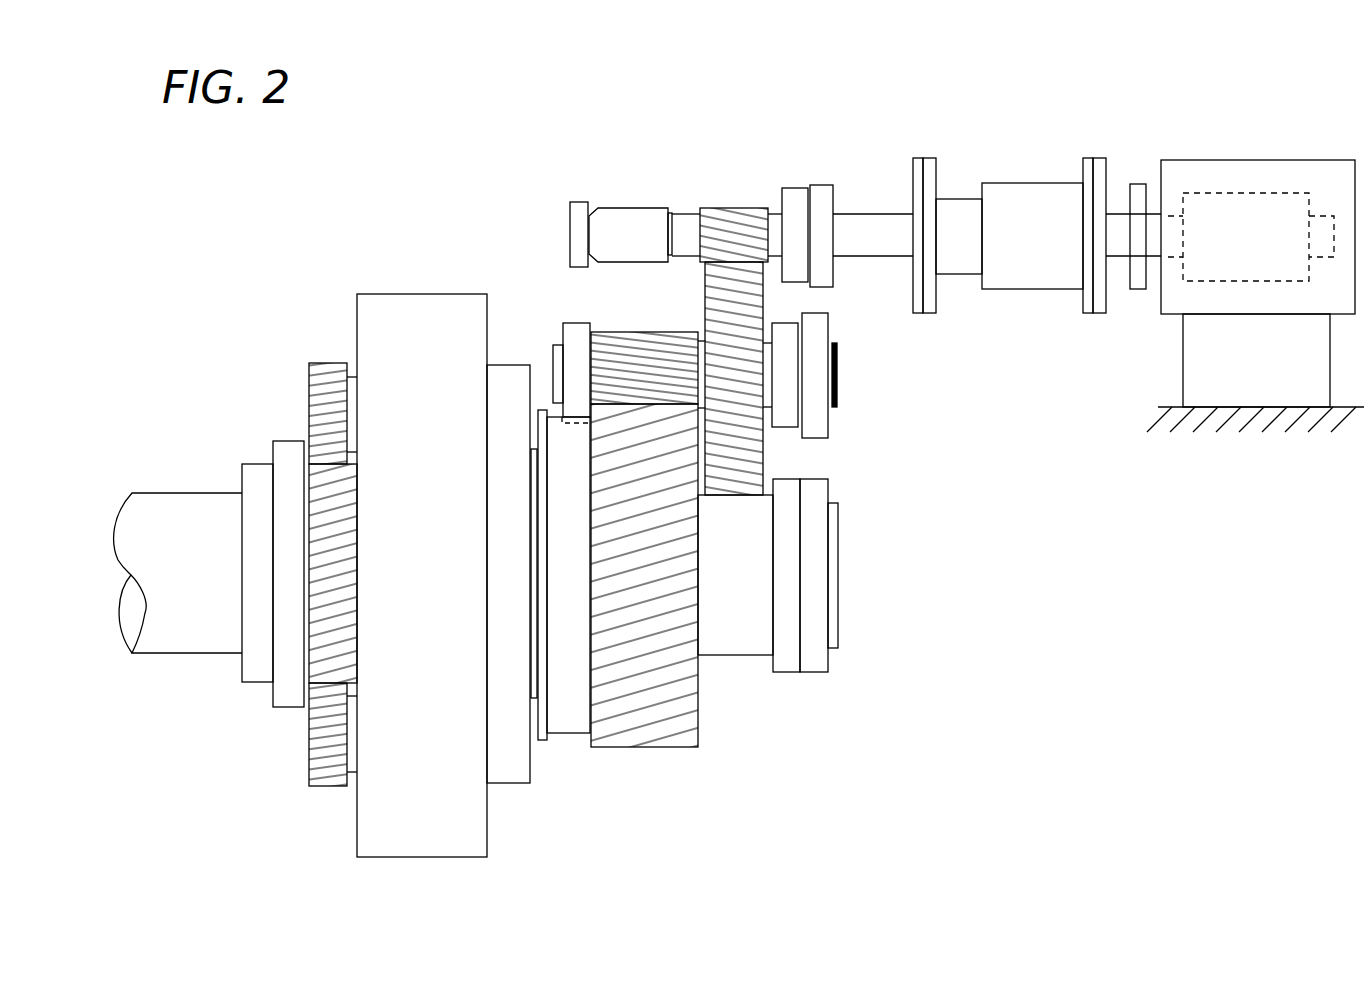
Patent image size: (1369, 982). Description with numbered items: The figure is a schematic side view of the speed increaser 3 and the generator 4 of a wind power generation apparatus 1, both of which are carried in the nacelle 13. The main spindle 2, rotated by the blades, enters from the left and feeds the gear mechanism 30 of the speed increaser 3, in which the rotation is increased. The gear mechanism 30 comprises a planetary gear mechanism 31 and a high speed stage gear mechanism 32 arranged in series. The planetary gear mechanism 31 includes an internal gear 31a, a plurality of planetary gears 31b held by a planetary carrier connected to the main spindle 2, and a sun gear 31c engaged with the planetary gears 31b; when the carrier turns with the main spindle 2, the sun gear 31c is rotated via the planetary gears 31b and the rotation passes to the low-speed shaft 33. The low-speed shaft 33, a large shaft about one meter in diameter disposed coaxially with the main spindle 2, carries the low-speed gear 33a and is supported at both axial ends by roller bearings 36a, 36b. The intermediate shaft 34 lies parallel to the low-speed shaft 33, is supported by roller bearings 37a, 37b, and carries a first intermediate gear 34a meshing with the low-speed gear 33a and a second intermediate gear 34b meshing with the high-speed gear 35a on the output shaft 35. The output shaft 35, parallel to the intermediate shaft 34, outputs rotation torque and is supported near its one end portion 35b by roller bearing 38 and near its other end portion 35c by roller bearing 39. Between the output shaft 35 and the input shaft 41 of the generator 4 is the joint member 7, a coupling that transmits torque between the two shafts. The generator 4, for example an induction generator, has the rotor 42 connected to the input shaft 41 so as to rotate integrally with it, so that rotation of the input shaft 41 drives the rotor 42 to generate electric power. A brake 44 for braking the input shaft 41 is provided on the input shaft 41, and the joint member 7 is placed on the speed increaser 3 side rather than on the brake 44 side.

The wind power generation apparatus 1 is at (1120, 108).
The main spindle 2 is at (157, 505).
The speed increaser 3 is at (417, 245).
The generator 4 is at (1229, 318).
The joint member 7 is at (1041, 176).
The nacelle 13 is at (1176, 407).
The gear mechanism 30 is at (356, 293).
The planetary gear mechanism 31 is at (449, 292).
The internal gear 31a is at (387, 303).
The planetary gears 31b is at (312, 385).
The sun gear 31c is at (313, 517).
The high speed stage gear mechanism 32 is at (723, 172).
The low-speed shaft 33 is at (737, 655).
The low-speed gear 33a is at (645, 740).
The intermediate shaft 34 is at (553, 345).
The first intermediate gear 34a is at (634, 340).
The second intermediate gear 34b is at (763, 297).
The output shaft 35 is at (637, 207).
The high-speed gear 35a is at (740, 208).
The one end portion 35b is at (613, 213).
The other end portion 35c is at (868, 214).
The roller bearing 36a is at (569, 722).
The roller bearing 36b is at (783, 672).
The roller bearing 37a is at (575, 323).
The roller bearing 37b is at (790, 341).
The roller bearing 38 is at (578, 202).
The roller bearing 39 is at (793, 189).
The input shaft 41 is at (1119, 262).
The rotor 42 is at (1283, 273).
The brake 44 is at (1137, 183).